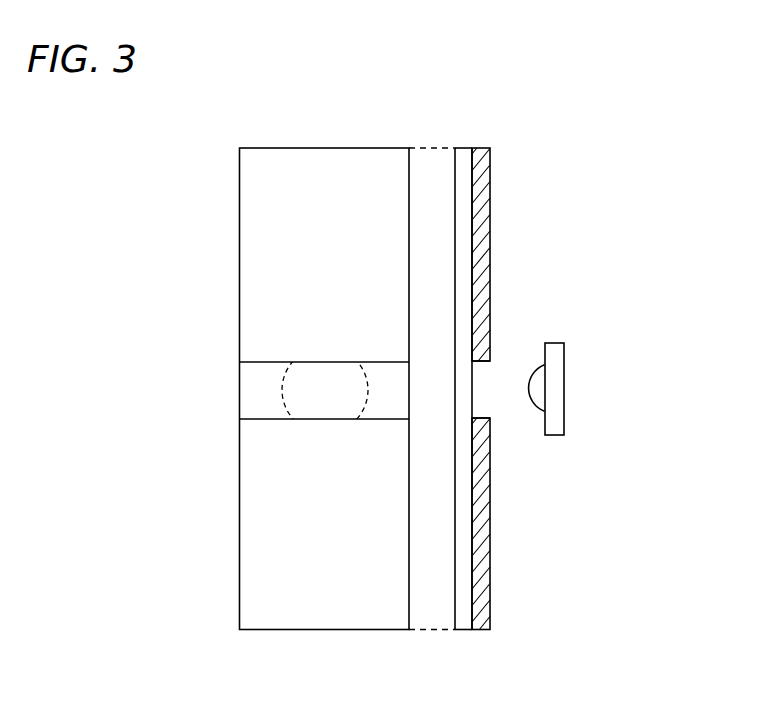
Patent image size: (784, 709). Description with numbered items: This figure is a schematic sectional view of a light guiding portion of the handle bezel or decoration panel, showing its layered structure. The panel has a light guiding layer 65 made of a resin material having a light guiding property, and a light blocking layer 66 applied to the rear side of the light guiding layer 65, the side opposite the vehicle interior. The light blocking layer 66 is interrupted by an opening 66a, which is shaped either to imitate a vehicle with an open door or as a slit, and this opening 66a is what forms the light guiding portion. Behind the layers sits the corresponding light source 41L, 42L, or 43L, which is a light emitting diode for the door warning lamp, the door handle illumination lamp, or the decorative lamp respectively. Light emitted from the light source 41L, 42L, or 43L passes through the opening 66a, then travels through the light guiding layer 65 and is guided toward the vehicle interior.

The light guiding layer 65 is at (324, 617).
The light blocking layer 66 is at (490, 585).
The opening 66a is at (478, 418).
The light source 41L is at (641, 389).
The light source 42L is at (546, 389).
The light source 43L is at (564, 367).